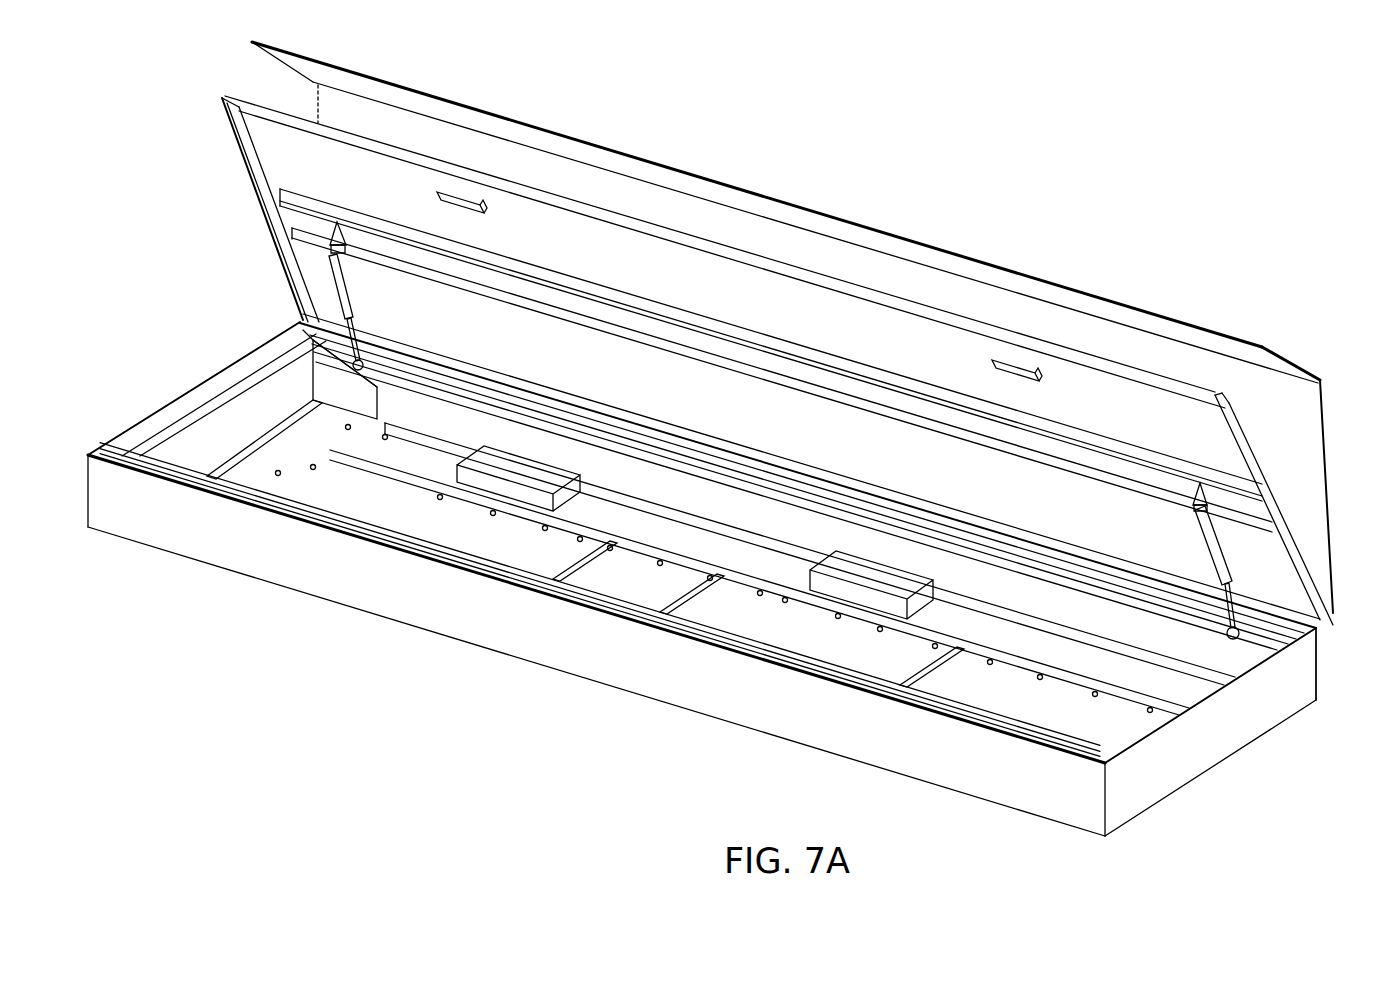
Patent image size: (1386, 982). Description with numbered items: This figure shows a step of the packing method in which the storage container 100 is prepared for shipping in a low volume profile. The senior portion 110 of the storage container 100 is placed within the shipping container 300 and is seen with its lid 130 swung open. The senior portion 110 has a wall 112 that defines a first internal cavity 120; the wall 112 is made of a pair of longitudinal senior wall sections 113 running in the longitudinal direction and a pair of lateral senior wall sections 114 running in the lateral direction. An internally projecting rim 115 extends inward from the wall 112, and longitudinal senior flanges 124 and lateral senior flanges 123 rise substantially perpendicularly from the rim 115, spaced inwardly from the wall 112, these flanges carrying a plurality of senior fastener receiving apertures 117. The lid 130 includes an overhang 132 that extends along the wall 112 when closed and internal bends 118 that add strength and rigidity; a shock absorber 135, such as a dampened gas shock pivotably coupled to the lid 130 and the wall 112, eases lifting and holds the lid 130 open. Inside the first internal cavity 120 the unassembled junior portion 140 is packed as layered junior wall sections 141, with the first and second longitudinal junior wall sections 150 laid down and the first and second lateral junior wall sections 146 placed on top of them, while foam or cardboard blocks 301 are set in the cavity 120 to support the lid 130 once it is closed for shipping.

The storage container 100 is at (1133, 172).
The senior portion 110 is at (1085, 332).
The wall 112 is at (1298, 628).
The longitudinal senior wall sections 113 is at (320, 362).
The lateral senior wall sections 114 is at (200, 408).
The internally projecting rim 115 is at (290, 423).
The senior fastener receiving apertures 117 is at (277, 474).
The internal bends 118 is at (1147, 452).
The first internal cavity 120 is at (1014, 705).
The lateral senior flanges 123 is at (255, 480).
The longitudinal senior flanges 124 is at (440, 440).
The lid 130 is at (1278, 469).
The overhang 132 is at (1228, 413).
The shock absorber 135 is at (322, 264).
The junior portion 140 is at (512, 572).
The junior wall sections 141 is at (622, 598).
The first and second lateral junior wall sections 146 is at (432, 524).
The first and second longitudinal junior wall sections 150 is at (1010, 642).
The shipping container 300 is at (254, 626).
The foam or cardboard blocks 301 is at (520, 470).